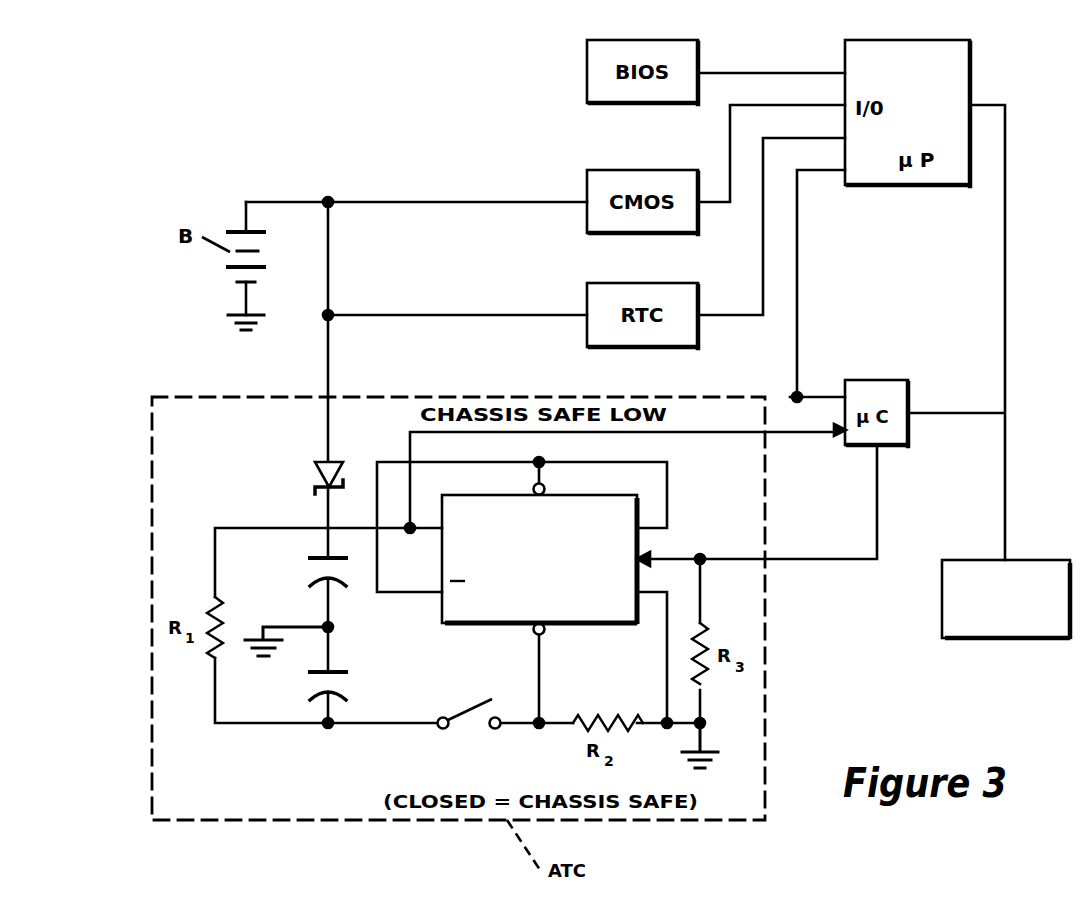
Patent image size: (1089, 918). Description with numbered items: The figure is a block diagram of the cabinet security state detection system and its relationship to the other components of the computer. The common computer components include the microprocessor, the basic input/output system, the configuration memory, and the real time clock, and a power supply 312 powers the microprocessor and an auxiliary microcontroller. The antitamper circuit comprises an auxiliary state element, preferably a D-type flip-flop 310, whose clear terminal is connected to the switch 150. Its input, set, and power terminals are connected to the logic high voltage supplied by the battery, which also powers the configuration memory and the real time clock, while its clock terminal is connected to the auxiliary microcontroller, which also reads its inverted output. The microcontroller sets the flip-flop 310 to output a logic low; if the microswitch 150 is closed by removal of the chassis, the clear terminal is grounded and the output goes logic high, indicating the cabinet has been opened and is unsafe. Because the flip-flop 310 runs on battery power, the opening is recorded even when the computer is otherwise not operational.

The switch 150 is at (408, 755).
The D-type flip-flop 310 is at (539, 559).
The power supply 312 is at (973, 643).